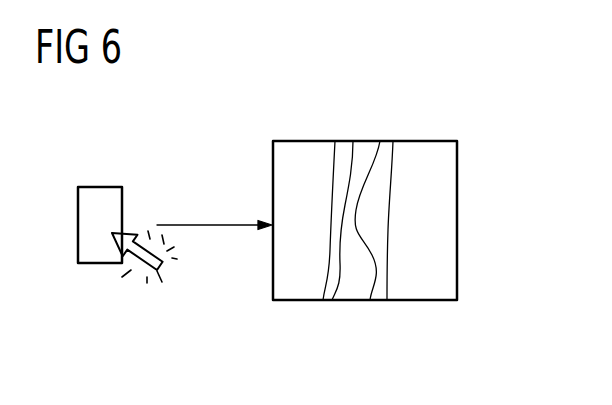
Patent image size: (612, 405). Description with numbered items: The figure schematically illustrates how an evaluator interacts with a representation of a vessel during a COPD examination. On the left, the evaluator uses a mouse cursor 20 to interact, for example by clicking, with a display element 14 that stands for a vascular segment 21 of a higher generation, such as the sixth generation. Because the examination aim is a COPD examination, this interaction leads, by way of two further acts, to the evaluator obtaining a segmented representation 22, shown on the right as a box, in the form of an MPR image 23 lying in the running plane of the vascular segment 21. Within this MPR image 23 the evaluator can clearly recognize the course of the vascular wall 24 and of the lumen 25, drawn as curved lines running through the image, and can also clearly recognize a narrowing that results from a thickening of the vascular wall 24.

The display element 14 is at (78, 228).
The mouse cursor 20 is at (141, 268).
The vascular segment 21 is at (302, 268).
The segmented representation 22 is at (371, 205).
The MPR image 23 is at (457, 219).
The vascular wall 24 is at (343, 150).
The lumen 25 is at (353, 285).